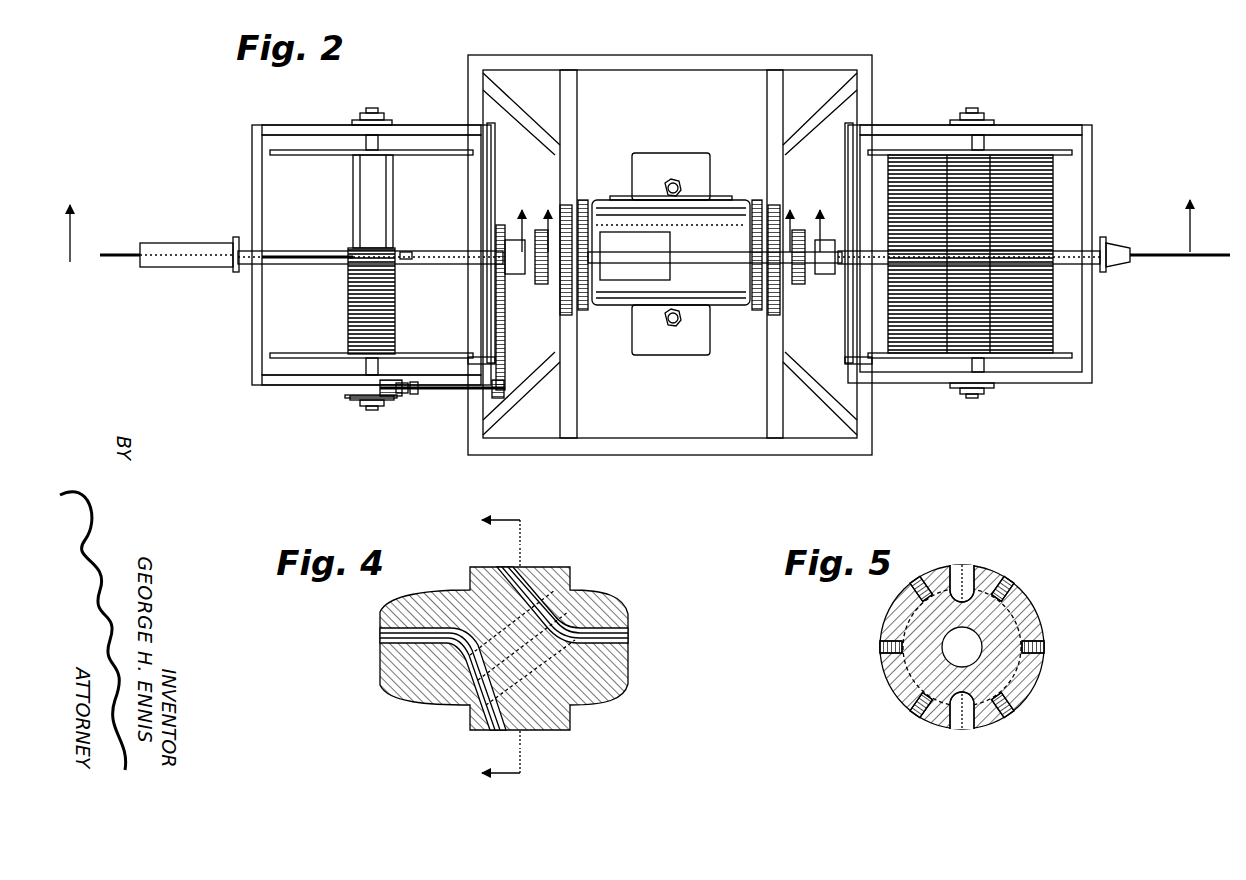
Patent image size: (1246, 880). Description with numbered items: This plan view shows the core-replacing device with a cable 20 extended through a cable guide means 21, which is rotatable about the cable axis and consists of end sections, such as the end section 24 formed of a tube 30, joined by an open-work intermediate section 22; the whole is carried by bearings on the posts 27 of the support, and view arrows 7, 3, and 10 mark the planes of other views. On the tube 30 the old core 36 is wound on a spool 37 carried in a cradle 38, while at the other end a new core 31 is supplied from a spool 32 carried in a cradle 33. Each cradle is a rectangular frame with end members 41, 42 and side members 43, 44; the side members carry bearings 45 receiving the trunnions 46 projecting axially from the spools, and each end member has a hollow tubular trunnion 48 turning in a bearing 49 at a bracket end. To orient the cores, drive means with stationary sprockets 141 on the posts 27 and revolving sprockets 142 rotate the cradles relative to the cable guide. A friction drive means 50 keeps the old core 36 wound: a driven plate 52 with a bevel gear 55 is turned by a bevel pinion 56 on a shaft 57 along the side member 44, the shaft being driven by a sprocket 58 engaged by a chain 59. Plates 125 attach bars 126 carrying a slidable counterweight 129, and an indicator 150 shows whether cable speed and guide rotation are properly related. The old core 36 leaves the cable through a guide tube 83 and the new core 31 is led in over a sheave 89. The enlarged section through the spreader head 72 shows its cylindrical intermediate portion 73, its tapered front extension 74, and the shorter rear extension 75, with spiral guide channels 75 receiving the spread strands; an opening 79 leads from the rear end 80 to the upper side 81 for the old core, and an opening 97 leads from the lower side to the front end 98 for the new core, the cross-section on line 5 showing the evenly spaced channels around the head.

In FIG. 2, the section line 3 is at (668, 217).
In FIG. 4, the section line 5 is at (486, 646).
In FIG. 2, the section line 7 is at (296, 220).
In FIG. 2, the section line 10 is at (1006, 211).
In FIG. 2, the cable 20 is at (135, 248).
In FIG. 2, the cable guide means 21 is at (727, 192).
In FIG. 2, the intermediate section 22 is at (727, 298).
In FIG. 2, the end section 24 is at (292, 270).
In FIG. 2, the posts 27 is at (577, 112).
In FIG. 2, the tube 30 is at (432, 250).
In FIG. 2, the new core 31 is at (1065, 250).
In FIG. 2, the spool 32 is at (1040, 150).
In FIG. 2, the cradle 33 is at (1032, 124).
In FIG. 2, the old core 36 is at (340, 252).
In FIG. 2, the spool 37 is at (300, 150).
In FIG. 2, the cradle 38 is at (327, 125).
In FIG. 2, the end member 41 is at (490, 175).
In FIG. 2, the end member 42 is at (252, 170).
In FIG. 2, the side member 43 is at (437, 127).
In FIG. 2, the side member 44 is at (292, 383).
In FIG. 2, the bearings 45 is at (372, 108).
In FIG. 2, the trunnions 46 is at (366, 366).
In FIG. 2, the tubular trunnion 48 is at (378, 140).
In FIG. 2, the bearings 49 is at (233, 245).
In FIG. 2, the friction drive means 50 is at (406, 400).
In FIG. 2, the driven plate 52 is at (358, 398).
In FIG. 2, the bevel gear 55 is at (400, 398).
In FIG. 2, the bevel pinion 56 is at (412, 382).
In FIG. 2, the shaft 57 is at (440, 391).
In FIG. 2, the sprocket 58 is at (505, 385).
In FIG. 2, the chain 59 is at (503, 318).
In FIG. 4, the spreader head 72 is at (562, 732).
In FIG. 5, the spreader head 72 is at (880, 620).
In FIG. 4, the intermediate portion 73 is at (472, 568).
In FIG. 5, the intermediate portion 73 is at (1040, 615).
In FIG. 4, the front extension 74 is at (420, 606).
In FIG. 4, the spiral guide channels 75 is at (600, 600).
In FIG. 5, the spiral guide channels 75 is at (1000, 585).
In FIG. 4, the opening 79 is at (556, 610).
In FIG. 5, the opening 79 is at (965, 568).
In FIG. 4, the rear end 80 is at (628, 640).
In FIG. 4, the upper side 81 is at (540, 568).
In FIG. 2, the guide tube 83 is at (408, 260).
In FIG. 2, the sheave 89 is at (1130, 252).
In FIG. 4, the opening 97 is at (450, 652).
In FIG. 5, the opening 97 is at (965, 727).
In FIG. 4, the front end 98 is at (380, 650).
In FIG. 2, the plates 125 is at (640, 198).
In FIG. 2, the bars 126 is at (673, 180).
In FIG. 2, the counterweight 129 is at (652, 345).
In FIG. 2, the stationary sprockets 141 is at (562, 298).
In FIG. 2, the sprockets 142 is at (542, 276).
In FIG. 2, the indicator 150 is at (688, 240).